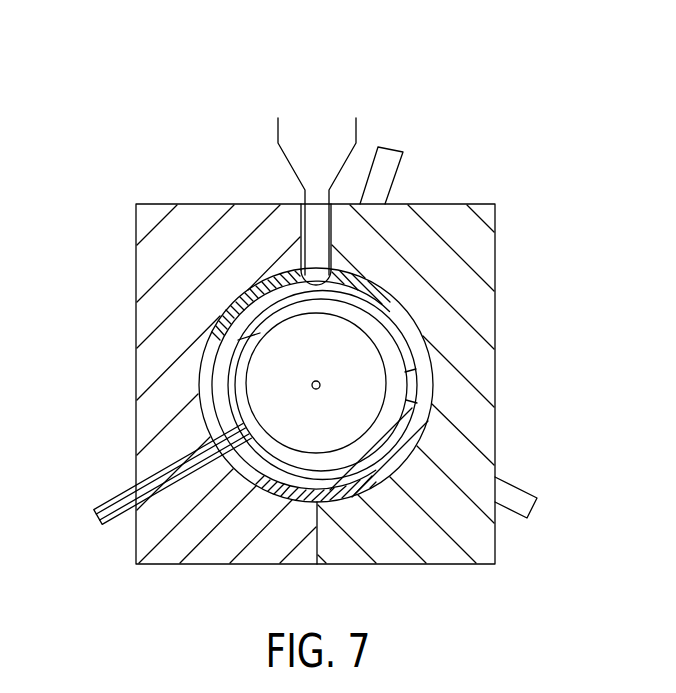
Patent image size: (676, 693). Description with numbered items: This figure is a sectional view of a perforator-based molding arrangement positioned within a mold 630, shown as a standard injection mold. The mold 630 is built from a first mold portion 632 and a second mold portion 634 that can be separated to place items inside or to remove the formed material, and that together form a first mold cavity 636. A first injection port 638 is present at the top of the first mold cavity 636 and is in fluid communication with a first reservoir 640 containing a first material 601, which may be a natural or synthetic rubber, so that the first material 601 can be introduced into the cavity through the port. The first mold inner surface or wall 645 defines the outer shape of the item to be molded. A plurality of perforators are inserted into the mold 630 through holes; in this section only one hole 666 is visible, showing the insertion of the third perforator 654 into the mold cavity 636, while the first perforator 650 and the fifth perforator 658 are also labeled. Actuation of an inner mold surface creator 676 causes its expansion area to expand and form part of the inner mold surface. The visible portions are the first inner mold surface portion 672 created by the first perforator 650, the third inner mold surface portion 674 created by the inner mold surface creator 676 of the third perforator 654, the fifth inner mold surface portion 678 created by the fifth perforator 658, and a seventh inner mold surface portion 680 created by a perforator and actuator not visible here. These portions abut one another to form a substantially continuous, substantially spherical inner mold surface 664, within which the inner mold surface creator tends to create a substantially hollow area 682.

The first material 601 is at (337, 116).
The first mold 630 is at (443, 171).
The first mold portion 632 is at (466, 207).
The second mold portion 634 is at (153, 213).
The first mold cavity 636 is at (203, 378).
The first injection port 638 is at (285, 280).
The first reservoir 640 is at (297, 151).
The first mold inner surface or wall 645 is at (228, 312).
The first perforator 650 is at (381, 148).
The third perforator 654 is at (99, 497).
The fifth perforator 658 is at (517, 483).
The inner mold surface 664 is at (432, 350).
The hole 666 is at (166, 478).
The first inner mold surface portion 672 is at (360, 298).
The third inner mold surface portion 674 is at (267, 500).
The inner mold surface creator 676 is at (170, 445).
The fifth inner mold surface portion 678 is at (420, 397).
The seventh inner mold surface portion 680 is at (365, 357).
The substantially hollow area 682 is at (354, 412).